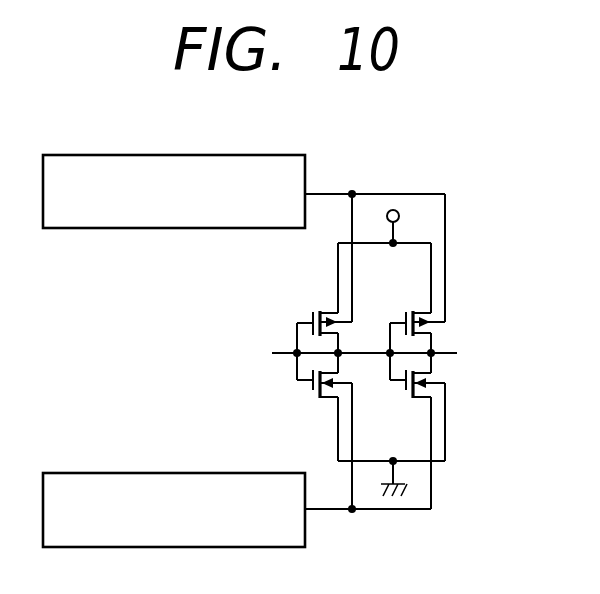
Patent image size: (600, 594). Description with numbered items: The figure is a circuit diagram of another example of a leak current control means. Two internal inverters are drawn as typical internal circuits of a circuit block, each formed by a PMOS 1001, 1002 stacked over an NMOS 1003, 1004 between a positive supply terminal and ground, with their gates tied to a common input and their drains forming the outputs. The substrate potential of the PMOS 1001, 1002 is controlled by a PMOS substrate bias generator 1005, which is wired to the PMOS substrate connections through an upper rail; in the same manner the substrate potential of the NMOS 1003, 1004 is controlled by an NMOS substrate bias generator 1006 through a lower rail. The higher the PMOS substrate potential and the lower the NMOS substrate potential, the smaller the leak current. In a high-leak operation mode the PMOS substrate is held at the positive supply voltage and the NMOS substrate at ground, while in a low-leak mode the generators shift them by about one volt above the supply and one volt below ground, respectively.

The PMOS 1001 is at (311, 315).
The PMOS 1002 is at (434, 320).
The NMOS 1003 is at (311, 390).
The NMOS 1004 is at (434, 377).
The PMOS substrate bias generator 1005 is at (100, 155).
The NMOS substrate bias generator 1006 is at (100, 473).